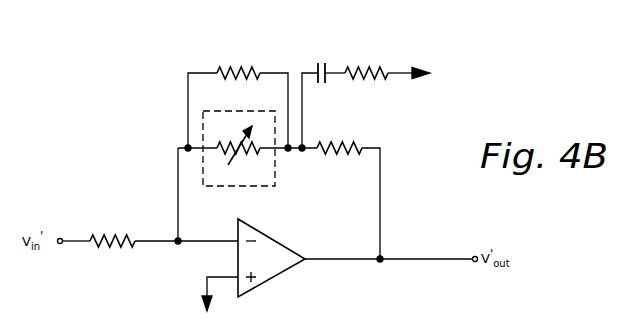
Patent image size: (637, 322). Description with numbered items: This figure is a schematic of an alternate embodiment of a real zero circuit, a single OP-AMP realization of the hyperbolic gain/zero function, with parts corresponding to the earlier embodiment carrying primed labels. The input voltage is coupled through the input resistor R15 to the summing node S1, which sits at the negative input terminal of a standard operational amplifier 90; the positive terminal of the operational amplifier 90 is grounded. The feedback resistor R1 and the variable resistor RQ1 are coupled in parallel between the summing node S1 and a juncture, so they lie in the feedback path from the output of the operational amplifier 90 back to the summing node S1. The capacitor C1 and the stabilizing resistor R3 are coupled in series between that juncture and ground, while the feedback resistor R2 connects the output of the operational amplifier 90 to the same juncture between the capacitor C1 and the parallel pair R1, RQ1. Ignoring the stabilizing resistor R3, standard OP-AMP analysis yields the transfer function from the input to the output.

The operational amplifier 90 is at (275, 279).
The resistor R'1 R1 is at (238, 56).
The capacitor C'1 C1 is at (318, 58).
The stabilizing resistor R'3 R3 is at (366, 56).
The resistor RQ1 is at (239, 148).
The resistor R'2 R2 is at (339, 165).
The input resistor R'15 R15 is at (112, 255).
The summing node S'1 S1 is at (177, 240).